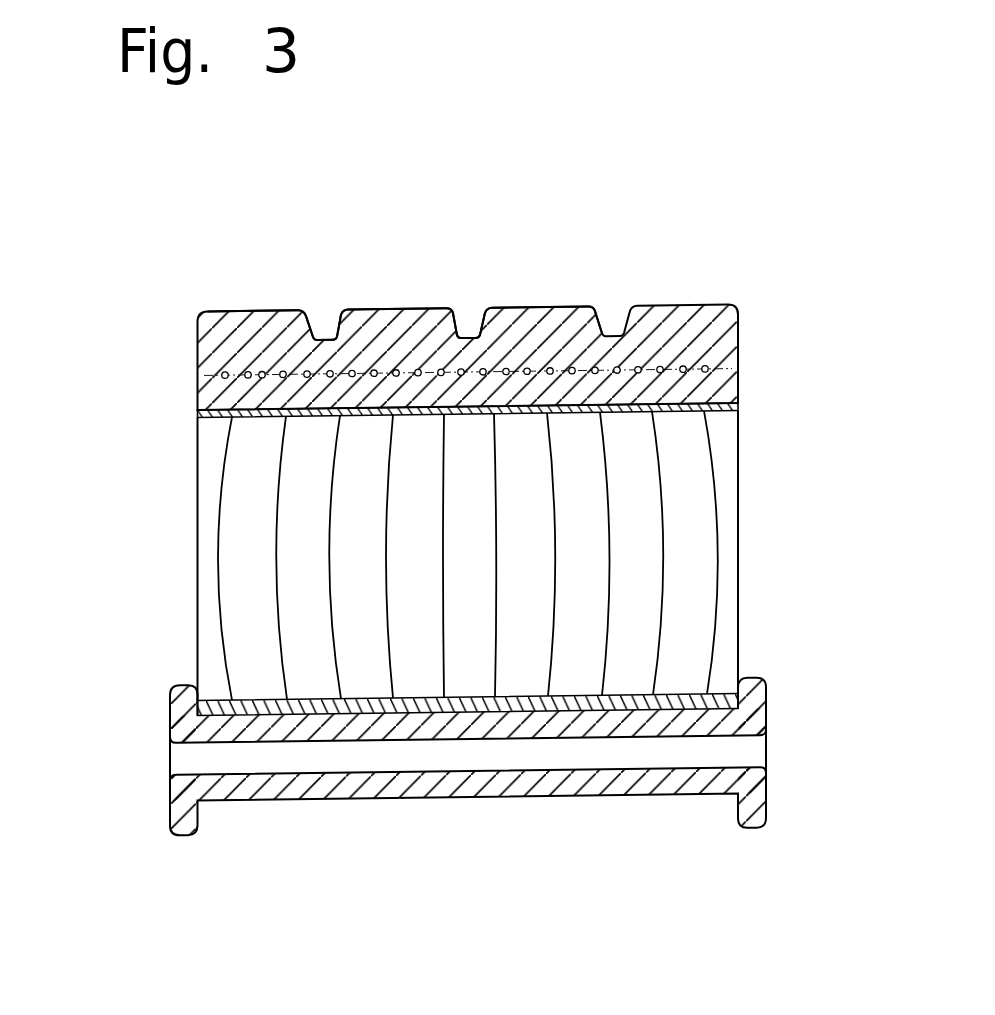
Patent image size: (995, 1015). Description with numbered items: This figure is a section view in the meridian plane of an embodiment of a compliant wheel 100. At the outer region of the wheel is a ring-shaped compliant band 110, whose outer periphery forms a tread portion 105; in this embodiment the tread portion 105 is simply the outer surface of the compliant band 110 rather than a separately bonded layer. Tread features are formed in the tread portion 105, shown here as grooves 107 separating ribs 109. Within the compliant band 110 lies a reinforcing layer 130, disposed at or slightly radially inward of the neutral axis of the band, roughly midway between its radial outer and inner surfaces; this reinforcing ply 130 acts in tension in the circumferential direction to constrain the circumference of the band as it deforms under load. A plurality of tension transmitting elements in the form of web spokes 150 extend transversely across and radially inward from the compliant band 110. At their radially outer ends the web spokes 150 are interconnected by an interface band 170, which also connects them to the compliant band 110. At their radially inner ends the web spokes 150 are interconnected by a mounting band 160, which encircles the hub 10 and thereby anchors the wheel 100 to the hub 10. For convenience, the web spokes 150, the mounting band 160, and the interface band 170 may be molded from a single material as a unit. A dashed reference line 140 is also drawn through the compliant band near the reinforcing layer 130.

The wheel 100 is at (147, 260).
The hub 10 is at (170, 775).
The compliant band 110 is at (173, 373).
The tread portion 105 is at (278, 312).
The grooves 107 is at (463, 317).
The ribs 109 is at (521, 307).
The reinforcing layer 130 is at (650, 362).
The passage centerline 140 is at (632, 350).
The web spokes 150 is at (197, 527).
The mounting band 160 is at (673, 693).
The interface band 170 is at (268, 418).